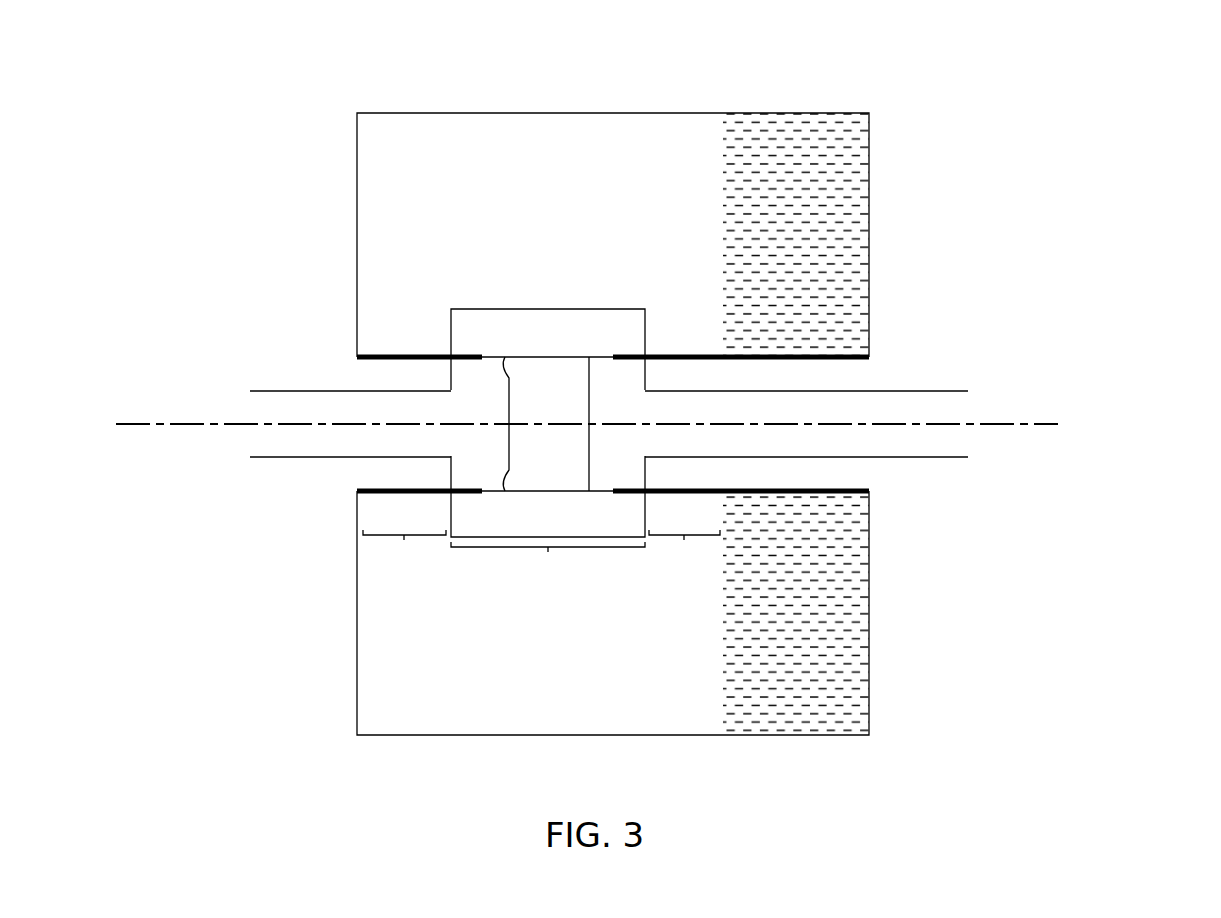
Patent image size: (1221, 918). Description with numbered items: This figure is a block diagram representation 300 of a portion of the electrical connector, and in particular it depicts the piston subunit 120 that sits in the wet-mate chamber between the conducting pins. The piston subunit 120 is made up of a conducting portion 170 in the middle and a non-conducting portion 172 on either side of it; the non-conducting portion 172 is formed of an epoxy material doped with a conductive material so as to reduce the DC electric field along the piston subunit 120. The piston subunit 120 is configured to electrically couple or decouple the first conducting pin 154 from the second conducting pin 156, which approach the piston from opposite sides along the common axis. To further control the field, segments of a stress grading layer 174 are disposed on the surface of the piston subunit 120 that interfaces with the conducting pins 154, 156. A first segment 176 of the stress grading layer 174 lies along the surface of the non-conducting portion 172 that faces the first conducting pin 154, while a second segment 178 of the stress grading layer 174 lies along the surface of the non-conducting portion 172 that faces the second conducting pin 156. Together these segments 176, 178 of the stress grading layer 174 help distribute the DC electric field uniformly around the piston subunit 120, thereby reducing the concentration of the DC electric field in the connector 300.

The block diagram representation 300 is at (1107, 92).
The piston subunit 120 is at (568, 108).
The first conducting pin 154 is at (358, 390).
The second conducting pin 156 is at (885, 390).
The stress grading layer 174 is at (806, 489).
The first segment 176 is at (360, 487).
The second segment 178 is at (828, 495).
The conducting portion 170 is at (548, 562).
The non-conducting portion 172 is at (541, 550).